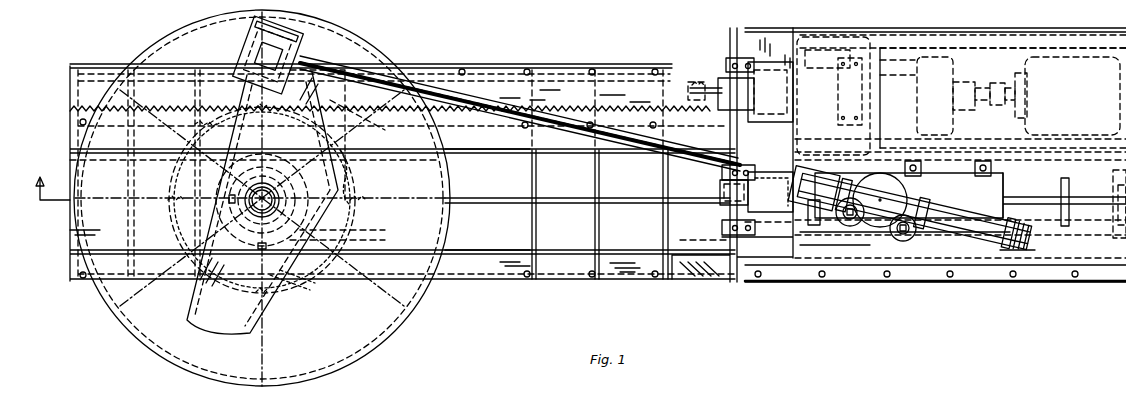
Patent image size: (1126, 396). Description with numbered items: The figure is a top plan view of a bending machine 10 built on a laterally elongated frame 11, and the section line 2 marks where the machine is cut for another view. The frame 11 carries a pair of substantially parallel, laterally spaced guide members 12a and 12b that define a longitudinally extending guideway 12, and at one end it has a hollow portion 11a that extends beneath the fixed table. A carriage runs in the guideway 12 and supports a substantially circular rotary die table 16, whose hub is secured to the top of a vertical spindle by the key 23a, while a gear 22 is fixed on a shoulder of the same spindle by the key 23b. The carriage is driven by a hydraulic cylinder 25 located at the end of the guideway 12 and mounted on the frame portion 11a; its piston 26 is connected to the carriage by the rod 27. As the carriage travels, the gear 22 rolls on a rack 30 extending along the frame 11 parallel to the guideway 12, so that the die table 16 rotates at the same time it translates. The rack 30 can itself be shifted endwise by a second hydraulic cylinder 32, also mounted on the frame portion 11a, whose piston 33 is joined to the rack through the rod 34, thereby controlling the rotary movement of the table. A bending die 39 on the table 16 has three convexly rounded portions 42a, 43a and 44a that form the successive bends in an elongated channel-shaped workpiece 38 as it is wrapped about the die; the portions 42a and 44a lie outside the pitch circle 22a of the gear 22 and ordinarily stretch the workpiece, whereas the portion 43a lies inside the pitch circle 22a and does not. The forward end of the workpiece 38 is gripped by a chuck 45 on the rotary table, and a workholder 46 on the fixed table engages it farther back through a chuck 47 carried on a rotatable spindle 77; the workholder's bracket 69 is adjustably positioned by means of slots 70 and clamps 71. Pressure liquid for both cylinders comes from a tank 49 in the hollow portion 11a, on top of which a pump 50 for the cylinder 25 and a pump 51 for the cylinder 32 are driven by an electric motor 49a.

The section line 2- 2 is at (52, 180).
The bending machine 10 is at (918, 284).
The frame 11 is at (833, 282).
The hollow frame portion 11a is at (780, 250).
The guideway 12 is at (573, 238).
The guide member 12a is at (506, 250).
The guide member 12b is at (506, 150).
The rotary die table 16 is at (142, 305).
The gear 22 is at (168, 186).
The pitch circle 22a is at (195, 124).
The key 23a is at (255, 190).
The key 23b is at (262, 201).
The hydraulic cylinder 25 is at (778, 172).
The piston 26 is at (880, 247).
The rod 27 is at (648, 203).
The rack 30 is at (690, 108).
The hydraulic cylinder 32 is at (775, 78).
The piston 33 is at (803, 92).
The rod 34 is at (712, 88).
The workpiece 38 is at (710, 155).
The bending die 39 is at (292, 290).
The convexly rounded die portion 42a is at (350, 40).
The convexly rounded die portion 43a is at (360, 170).
The convexly rounded die portion 44a is at (263, 341).
The chuck 45 is at (305, 25).
The workholder 46 is at (958, 168).
The chuck 47 is at (828, 168).
The tank 49 is at (1010, 36).
The electric motor 49a is at (1078, 72).
The pump 50 is at (958, 42).
The pump 51 is at (915, 35).
The bracket 69 is at (1030, 195).
The slots 70 is at (1092, 205).
The clamps 71 is at (1000, 168).
The spindle 77 is at (1010, 248).